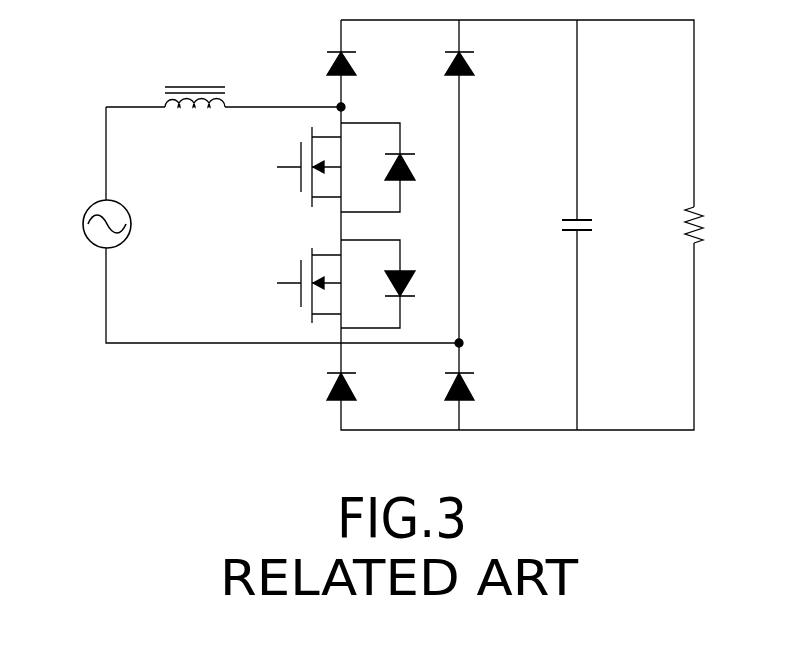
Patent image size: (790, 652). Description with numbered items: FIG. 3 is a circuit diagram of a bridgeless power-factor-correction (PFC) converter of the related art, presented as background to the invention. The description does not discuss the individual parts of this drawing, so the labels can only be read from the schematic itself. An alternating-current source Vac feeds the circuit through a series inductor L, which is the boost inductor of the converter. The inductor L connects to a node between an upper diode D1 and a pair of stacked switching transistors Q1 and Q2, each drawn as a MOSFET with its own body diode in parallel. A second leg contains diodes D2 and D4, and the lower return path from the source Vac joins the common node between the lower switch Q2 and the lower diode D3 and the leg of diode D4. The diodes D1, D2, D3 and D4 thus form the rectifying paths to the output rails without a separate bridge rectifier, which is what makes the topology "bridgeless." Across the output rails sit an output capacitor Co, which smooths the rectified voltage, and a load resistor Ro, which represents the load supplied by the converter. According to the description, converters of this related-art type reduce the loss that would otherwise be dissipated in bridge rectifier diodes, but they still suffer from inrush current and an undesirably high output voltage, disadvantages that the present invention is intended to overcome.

The inductor L is at (195, 116).
The AC voltage source Vac is at (81, 224).
The first switching transistor Q1 is at (342, 158).
The second switching transistor Q2 is at (342, 275).
The first diode D1 is at (365, 64).
The second diode D2 is at (482, 64).
The third diode D3 is at (365, 389).
The fourth diode D4 is at (482, 389).
The output capacitor Co is at (598, 227).
The output load resistor Ro is at (715, 226).